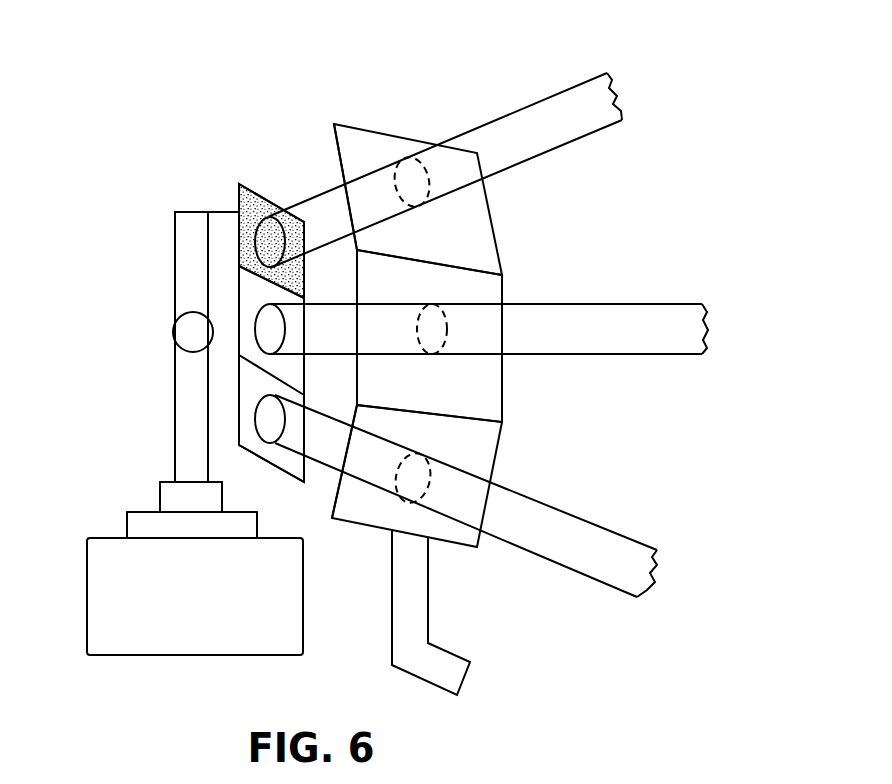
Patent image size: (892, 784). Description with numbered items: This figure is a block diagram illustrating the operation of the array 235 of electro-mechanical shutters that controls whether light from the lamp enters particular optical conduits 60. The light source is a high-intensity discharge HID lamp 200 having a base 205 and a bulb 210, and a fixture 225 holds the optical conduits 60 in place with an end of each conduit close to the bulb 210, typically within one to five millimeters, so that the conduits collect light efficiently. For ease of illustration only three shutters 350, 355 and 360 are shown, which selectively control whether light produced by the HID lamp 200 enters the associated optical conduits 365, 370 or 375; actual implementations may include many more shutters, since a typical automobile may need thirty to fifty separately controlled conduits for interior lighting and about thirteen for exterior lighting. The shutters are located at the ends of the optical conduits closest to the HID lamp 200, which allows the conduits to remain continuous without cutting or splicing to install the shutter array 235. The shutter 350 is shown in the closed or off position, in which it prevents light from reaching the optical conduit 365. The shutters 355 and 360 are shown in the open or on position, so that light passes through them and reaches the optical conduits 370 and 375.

The optical conduits 60 is at (600, 130).
The HID lamp 200 is at (168, 204).
The base 205 is at (113, 607).
The bulb 210 is at (183, 335).
The fixture 225 is at (375, 122).
The array of electro-mechanical shutters 235 is at (251, 177).
The shutter 350 is at (239, 211).
The shutter 355 is at (250, 288).
The shutter 360 is at (239, 440).
The optical conduit 365 is at (327, 213).
The optical conduit 370 is at (328, 333).
The optical conduit 375 is at (328, 452).